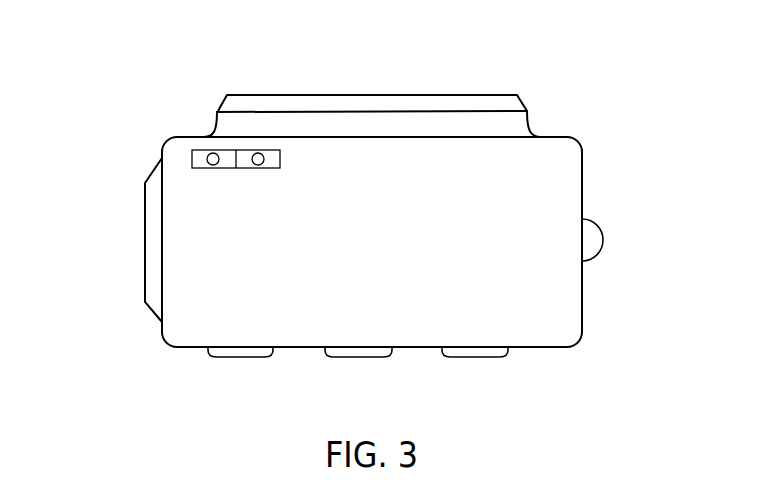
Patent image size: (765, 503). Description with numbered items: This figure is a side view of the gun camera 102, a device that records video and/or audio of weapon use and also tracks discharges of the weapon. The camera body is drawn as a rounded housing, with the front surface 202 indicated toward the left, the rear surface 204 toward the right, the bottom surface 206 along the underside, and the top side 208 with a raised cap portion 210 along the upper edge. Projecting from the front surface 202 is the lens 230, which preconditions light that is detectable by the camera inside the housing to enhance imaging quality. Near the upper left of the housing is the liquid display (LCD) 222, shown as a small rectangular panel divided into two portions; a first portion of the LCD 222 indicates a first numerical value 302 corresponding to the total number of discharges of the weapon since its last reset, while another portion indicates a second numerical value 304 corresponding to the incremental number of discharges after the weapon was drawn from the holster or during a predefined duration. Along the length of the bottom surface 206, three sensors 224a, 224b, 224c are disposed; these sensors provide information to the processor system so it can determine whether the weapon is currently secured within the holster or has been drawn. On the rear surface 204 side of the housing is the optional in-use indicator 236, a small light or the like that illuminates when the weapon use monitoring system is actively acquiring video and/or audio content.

The gun camera 102 is at (562, 176).
The front surface 202 is at (73, 228).
The rear surface 204 is at (646, 213).
The bottom surface 206 is at (539, 388).
The top side 208 is at (376, 65).
The top cap portion 210 is at (530, 122).
The liquid display (LCD) 222 is at (190, 160).
The sensor 224a is at (474, 358).
The sensor 224b is at (357, 358).
The sensor 224c is at (240, 358).
The lens 230 is at (145, 262).
The in-use indicator 236 is at (594, 241).
The first numerical value 302 is at (260, 187).
The second numerical value 304 is at (218, 183).